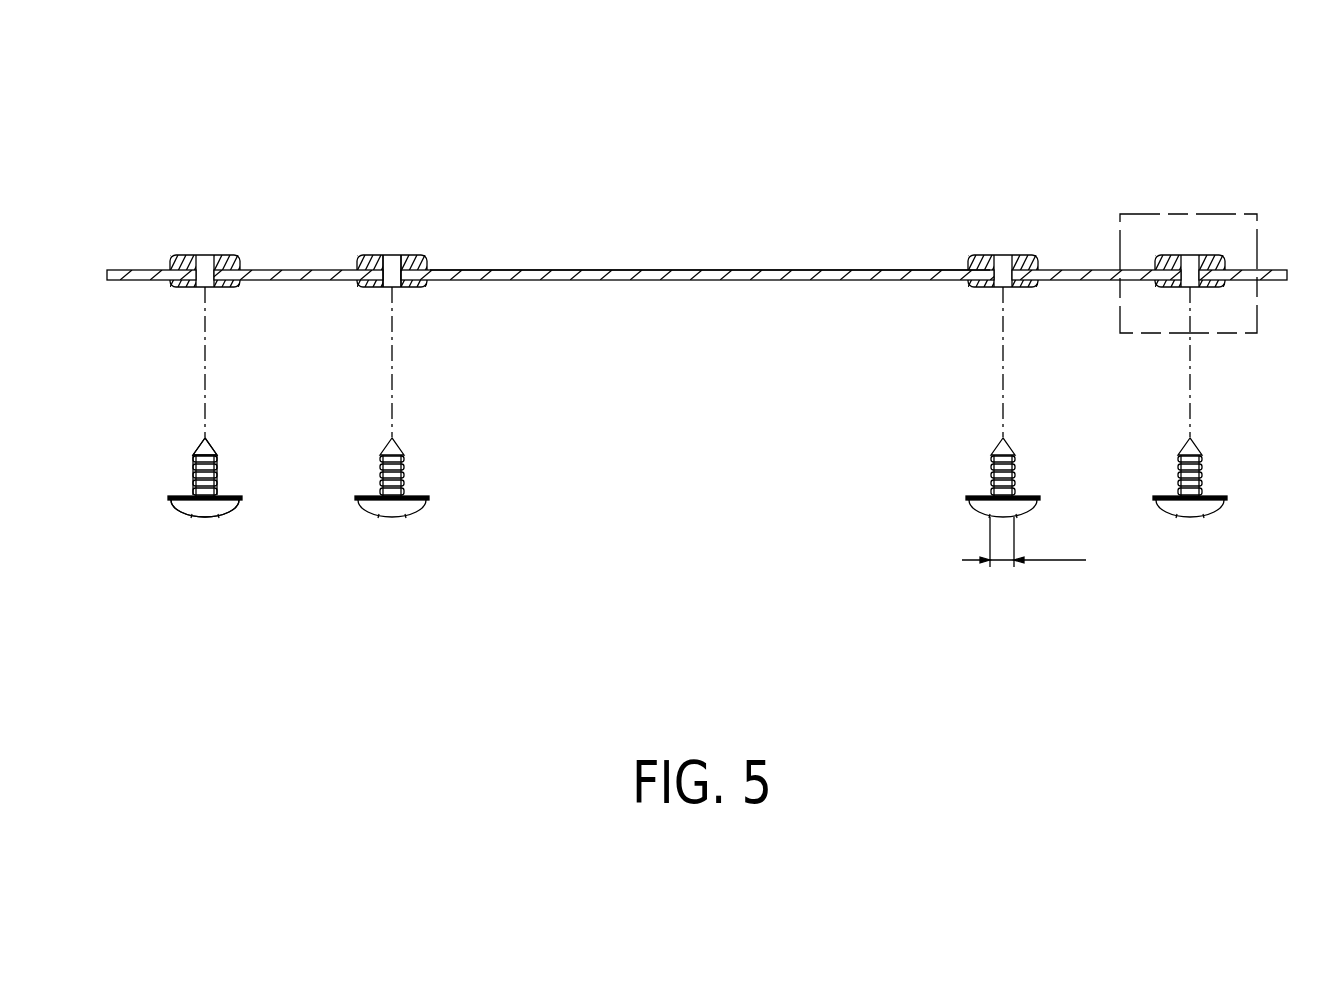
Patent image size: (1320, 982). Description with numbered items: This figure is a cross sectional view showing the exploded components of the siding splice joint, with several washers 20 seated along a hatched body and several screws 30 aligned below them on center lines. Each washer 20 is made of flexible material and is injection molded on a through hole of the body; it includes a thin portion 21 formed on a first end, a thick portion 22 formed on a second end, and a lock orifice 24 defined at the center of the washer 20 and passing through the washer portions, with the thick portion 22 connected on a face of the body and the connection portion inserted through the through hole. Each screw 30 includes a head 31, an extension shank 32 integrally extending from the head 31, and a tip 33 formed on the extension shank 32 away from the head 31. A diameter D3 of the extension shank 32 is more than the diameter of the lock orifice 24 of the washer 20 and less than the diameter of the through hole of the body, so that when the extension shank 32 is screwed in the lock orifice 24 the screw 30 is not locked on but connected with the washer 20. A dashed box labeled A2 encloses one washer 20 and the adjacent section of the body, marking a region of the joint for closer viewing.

The washer 20 is at (243, 228).
The thin portion 21 is at (427, 284).
The thick portion 22 is at (427, 266).
The lock orifice 24 is at (392, 266).
The screw 30 is at (203, 537).
The head 31 is at (222, 505).
The extension shank 32 is at (192, 470).
The tip 33 is at (205, 440).
The diameter of the extension shank D3 is at (1024, 542).
The enlarged region A2 is at (1228, 214).